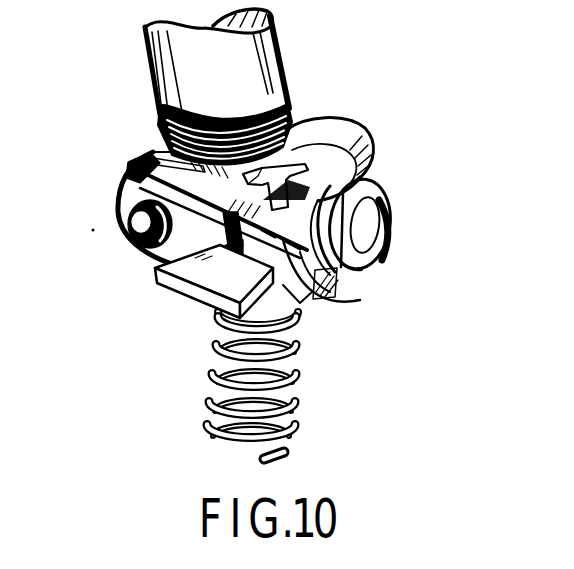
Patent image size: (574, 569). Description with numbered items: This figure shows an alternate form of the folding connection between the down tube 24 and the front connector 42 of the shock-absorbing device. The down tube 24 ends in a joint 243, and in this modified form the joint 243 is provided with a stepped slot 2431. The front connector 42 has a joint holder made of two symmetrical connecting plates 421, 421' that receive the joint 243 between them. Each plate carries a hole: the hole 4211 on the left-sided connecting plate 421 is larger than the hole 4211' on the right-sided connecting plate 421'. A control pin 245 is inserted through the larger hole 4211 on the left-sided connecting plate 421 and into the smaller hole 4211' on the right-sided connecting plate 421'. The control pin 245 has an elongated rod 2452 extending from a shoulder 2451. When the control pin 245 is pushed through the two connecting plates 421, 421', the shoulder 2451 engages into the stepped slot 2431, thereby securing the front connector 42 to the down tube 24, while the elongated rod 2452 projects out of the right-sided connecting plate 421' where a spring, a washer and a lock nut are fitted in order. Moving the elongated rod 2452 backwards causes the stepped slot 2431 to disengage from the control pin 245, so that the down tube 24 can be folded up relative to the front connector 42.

The down tube 24 is at (247, 67).
The joint 243 is at (322, 133).
The stepped slot 2431 is at (118, 189).
The front connector 42 is at (312, 326).
The left-sided connecting plate 421 is at (136, 243).
The right-sided connecting plate 421' is at (391, 225).
The hole 4211 is at (368, 314).
The hole 4211' is at (405, 218).
The control pin 245 is at (212, 287).
The shoulder 2451 is at (310, 330).
The elongated rod 2452 is at (358, 268).